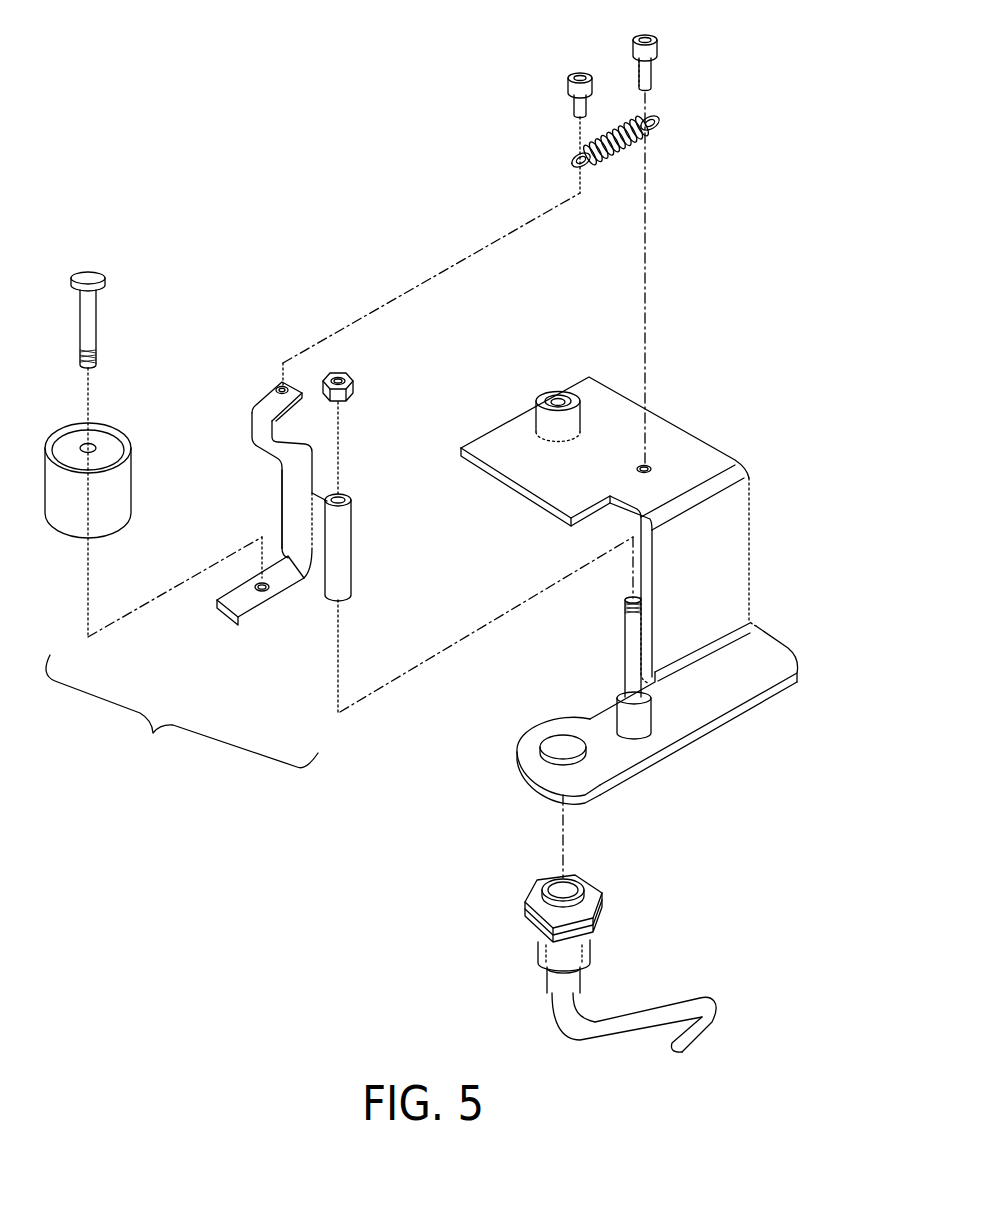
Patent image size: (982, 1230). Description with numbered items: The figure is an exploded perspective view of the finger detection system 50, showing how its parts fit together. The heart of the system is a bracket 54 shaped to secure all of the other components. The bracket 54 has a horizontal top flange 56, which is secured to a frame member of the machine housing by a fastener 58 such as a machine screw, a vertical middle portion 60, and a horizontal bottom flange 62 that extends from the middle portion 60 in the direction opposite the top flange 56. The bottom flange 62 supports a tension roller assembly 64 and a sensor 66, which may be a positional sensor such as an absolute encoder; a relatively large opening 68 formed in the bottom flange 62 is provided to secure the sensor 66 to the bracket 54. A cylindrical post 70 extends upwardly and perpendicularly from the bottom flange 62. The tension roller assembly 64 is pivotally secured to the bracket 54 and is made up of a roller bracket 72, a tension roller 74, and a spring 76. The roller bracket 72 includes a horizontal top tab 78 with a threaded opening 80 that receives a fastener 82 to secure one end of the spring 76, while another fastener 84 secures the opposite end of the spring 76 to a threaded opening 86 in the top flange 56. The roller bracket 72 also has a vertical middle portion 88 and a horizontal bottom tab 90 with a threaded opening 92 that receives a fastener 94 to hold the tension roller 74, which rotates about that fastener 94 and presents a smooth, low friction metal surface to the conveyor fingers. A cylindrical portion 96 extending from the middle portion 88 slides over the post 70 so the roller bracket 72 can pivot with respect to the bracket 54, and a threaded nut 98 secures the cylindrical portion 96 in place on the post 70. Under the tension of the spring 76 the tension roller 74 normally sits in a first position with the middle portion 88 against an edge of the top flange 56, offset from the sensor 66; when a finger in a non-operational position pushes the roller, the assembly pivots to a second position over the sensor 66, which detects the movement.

The finger detection system 50 is at (272, 152).
The bracket 54 is at (700, 397).
The horizontal top flange 56 is at (536, 465).
The fastener 58 is at (543, 394).
The vertical middle portion 60 is at (722, 542).
The horizontal bottom flange 62 is at (720, 690).
The tension roller assembly 64 is at (125, 768).
The sensor 66 is at (533, 900).
The opening 68 is at (560, 747).
The cylindrical post 70 is at (627, 637).
The roller bracket 72 is at (294, 468).
The tension roller 74 is at (118, 482).
The spring 76 is at (618, 157).
The horizontal top tab 78 is at (272, 392).
The threaded opening 80 is at (281, 388).
The fastener 82 is at (567, 88).
The fastener 84 is at (660, 50).
The threaded opening 86 is at (648, 466).
The vertical middle portion 88 is at (306, 516).
The horizontal bottom tab 90 is at (233, 600).
The threaded opening 92 is at (270, 583).
The fastener 94 is at (88, 318).
The cylindrical portion 96 is at (349, 537).
The threaded nut 98 is at (350, 376).